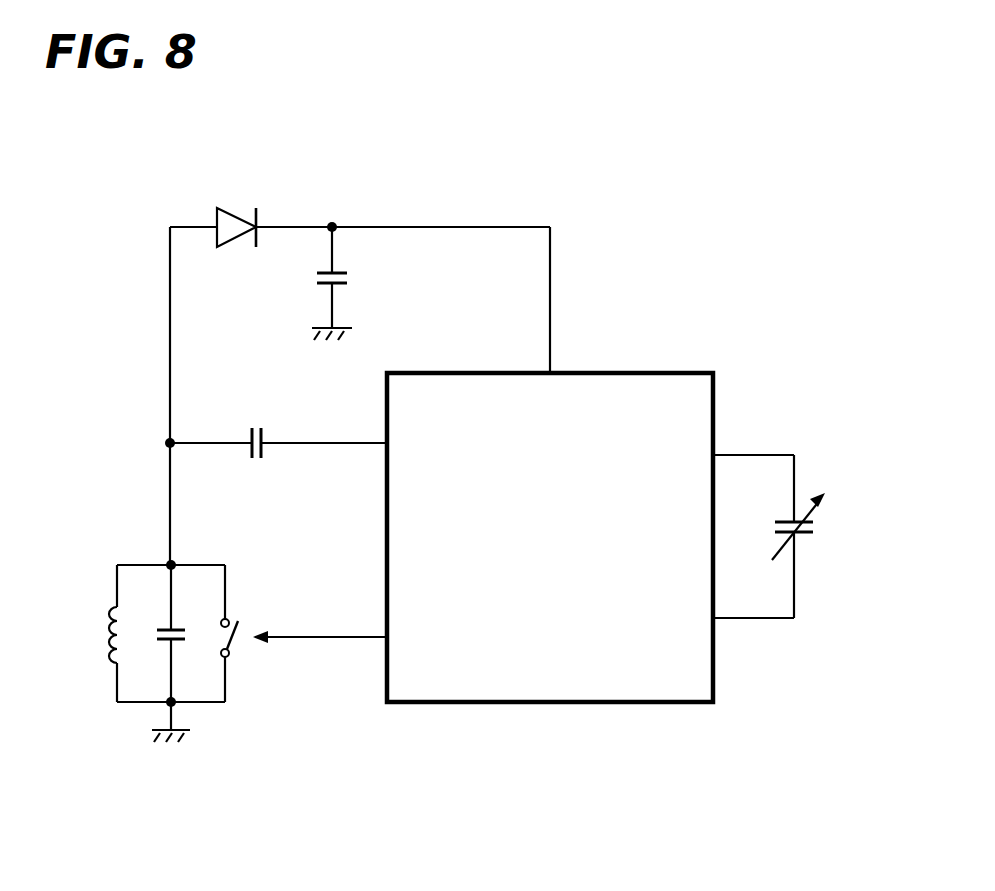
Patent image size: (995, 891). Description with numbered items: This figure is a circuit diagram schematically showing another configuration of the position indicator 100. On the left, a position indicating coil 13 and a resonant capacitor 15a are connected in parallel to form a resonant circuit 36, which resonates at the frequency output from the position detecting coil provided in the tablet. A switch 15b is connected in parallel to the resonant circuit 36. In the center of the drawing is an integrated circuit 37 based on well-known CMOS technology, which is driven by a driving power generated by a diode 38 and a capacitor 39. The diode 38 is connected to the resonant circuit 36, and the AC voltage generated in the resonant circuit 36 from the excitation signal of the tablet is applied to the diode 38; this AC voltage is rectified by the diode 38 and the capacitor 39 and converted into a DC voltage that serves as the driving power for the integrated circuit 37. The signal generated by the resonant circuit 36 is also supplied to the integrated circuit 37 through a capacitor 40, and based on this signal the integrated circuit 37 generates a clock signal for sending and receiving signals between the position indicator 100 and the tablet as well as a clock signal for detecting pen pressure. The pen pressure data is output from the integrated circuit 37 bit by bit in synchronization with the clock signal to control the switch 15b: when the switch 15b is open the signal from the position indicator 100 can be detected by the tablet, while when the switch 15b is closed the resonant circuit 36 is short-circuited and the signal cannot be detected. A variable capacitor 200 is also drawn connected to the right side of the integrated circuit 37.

The position indicator 100 is at (600, 156).
The position indicating coil 13 is at (100, 632).
The resonant capacitor 15a is at (180, 648).
The switch 15b is at (242, 648).
The resonant circuit 36 is at (145, 683).
The integrated circuit 37 is at (517, 705).
The diode 38 is at (232, 207).
The capacitor 39 is at (350, 278).
The capacitor 40 is at (256, 462).
The variable capacitor 200 is at (822, 534).